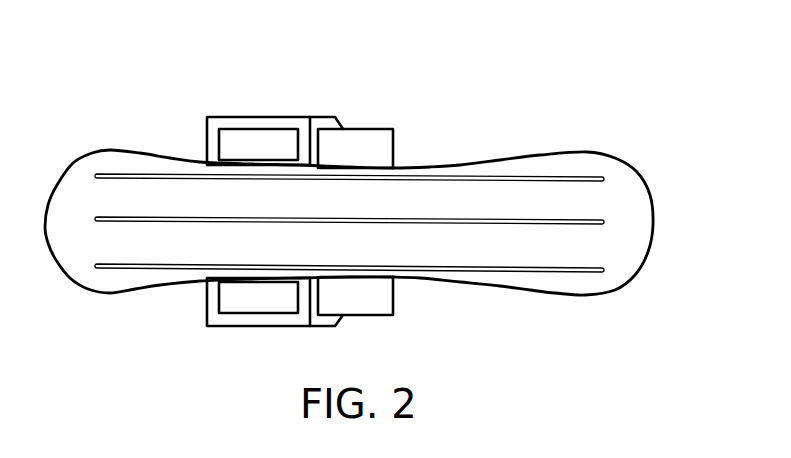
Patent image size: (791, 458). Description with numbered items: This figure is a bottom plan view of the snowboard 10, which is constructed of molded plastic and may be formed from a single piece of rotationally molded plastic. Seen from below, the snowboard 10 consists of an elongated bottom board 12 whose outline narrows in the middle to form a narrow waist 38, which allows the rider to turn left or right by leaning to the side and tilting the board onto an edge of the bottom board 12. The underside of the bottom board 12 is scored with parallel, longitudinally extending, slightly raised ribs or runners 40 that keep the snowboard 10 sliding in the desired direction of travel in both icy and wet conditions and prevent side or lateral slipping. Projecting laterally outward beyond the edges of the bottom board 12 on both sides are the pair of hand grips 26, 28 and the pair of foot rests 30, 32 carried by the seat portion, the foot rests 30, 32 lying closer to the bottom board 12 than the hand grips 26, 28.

The snowboard 10 is at (602, 126).
The bottom board 12 is at (450, 172).
The hand grip 26 is at (248, 326).
The hand grip 28 is at (242, 118).
The foot rest 30 is at (373, 312).
The foot rest 32 is at (371, 133).
The narrow waist 38 is at (375, 168).
The ribs or runners 40 is at (602, 179).